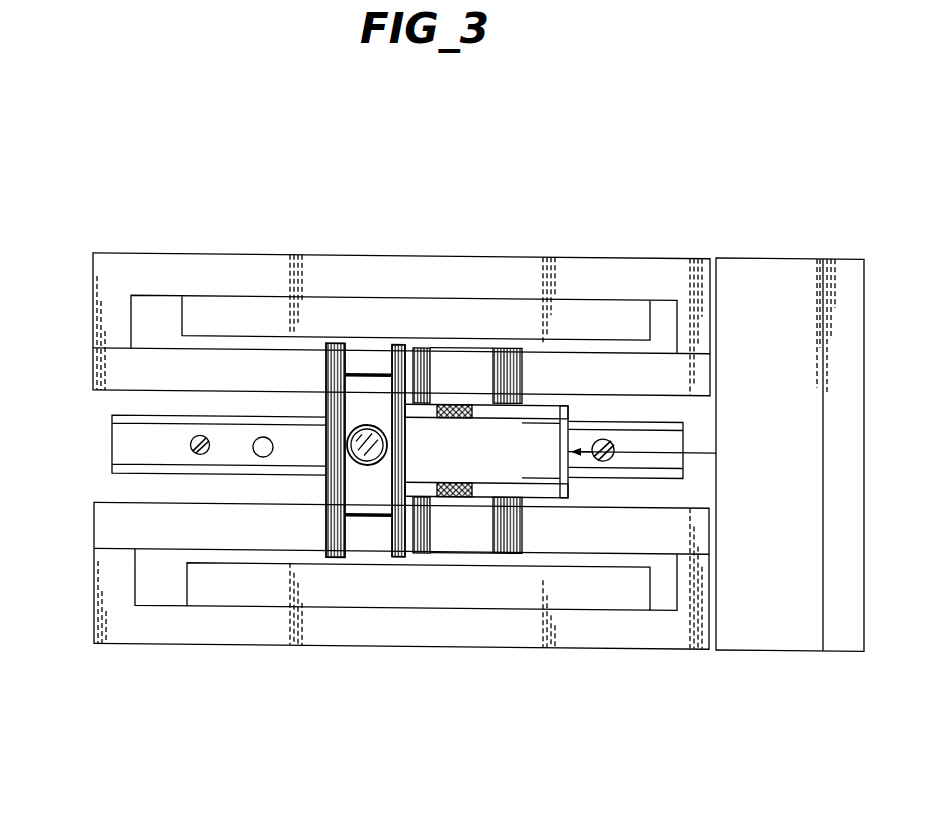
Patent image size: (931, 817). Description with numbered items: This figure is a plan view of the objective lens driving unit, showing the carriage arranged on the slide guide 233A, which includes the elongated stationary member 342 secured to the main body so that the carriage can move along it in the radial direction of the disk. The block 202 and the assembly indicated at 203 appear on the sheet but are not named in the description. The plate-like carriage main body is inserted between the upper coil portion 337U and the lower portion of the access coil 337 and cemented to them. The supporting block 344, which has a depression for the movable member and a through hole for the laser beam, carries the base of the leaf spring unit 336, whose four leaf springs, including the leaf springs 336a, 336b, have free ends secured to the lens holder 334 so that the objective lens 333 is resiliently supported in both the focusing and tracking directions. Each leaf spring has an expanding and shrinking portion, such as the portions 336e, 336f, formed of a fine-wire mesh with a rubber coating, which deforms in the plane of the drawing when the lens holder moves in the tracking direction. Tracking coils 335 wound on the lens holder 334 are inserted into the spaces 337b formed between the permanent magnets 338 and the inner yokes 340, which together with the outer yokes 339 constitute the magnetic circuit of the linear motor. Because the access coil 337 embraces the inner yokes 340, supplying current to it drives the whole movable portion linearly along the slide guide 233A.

The base block 202 is at (752, 244).
The drive mechanism 203 is at (531, 243).
The slide guide 233A is at (656, 492).
The objective lens 333 is at (370, 462).
The lens holder 334 is at (345, 550).
The tracking coils 335 is at (392, 341).
The leaf spring unit 336 is at (580, 485).
The leaf spring 336a is at (487, 408).
The leaf spring 336b is at (526, 462).
The expanding and shrinking portion 336e is at (452, 399).
The expanding and shrinking portion 336f is at (452, 493).
The access coil 337 is at (470, 549).
The spaces 337b is at (190, 340).
The upper coil portion 337U is at (526, 430).
The permanent magnets 338 is at (235, 305).
The outer yokes 339 is at (112, 261).
The inner yokes 340 is at (100, 372).
The elongated stationary member 342 is at (120, 432).
The supporting block 344 is at (563, 498).